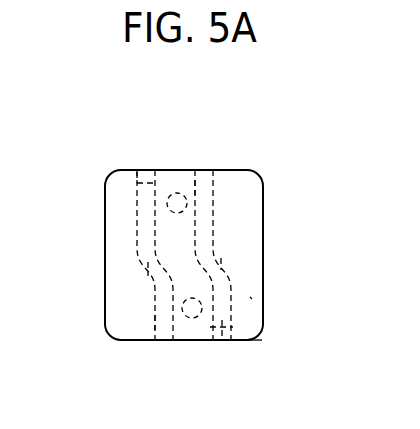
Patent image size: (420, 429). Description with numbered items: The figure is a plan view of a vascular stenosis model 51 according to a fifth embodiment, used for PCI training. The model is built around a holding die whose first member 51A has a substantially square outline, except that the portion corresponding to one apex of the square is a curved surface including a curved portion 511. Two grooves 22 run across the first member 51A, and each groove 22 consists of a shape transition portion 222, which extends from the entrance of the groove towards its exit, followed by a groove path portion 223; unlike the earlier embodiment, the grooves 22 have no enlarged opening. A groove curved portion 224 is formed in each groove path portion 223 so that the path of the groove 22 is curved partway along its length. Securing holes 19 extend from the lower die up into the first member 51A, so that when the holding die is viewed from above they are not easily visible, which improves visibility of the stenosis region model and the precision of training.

The securing hole 19 is at (168, 210).
The groove 22 is at (150, 157).
The shape transition portion 222 is at (138, 184).
The groove path portion 223 is at (195, 194).
The groove curved portion 224 is at (150, 270).
The vascular stenosis model 51 is at (284, 184).
The first member 51A is at (252, 298).
The curved portion 511 is at (262, 336).